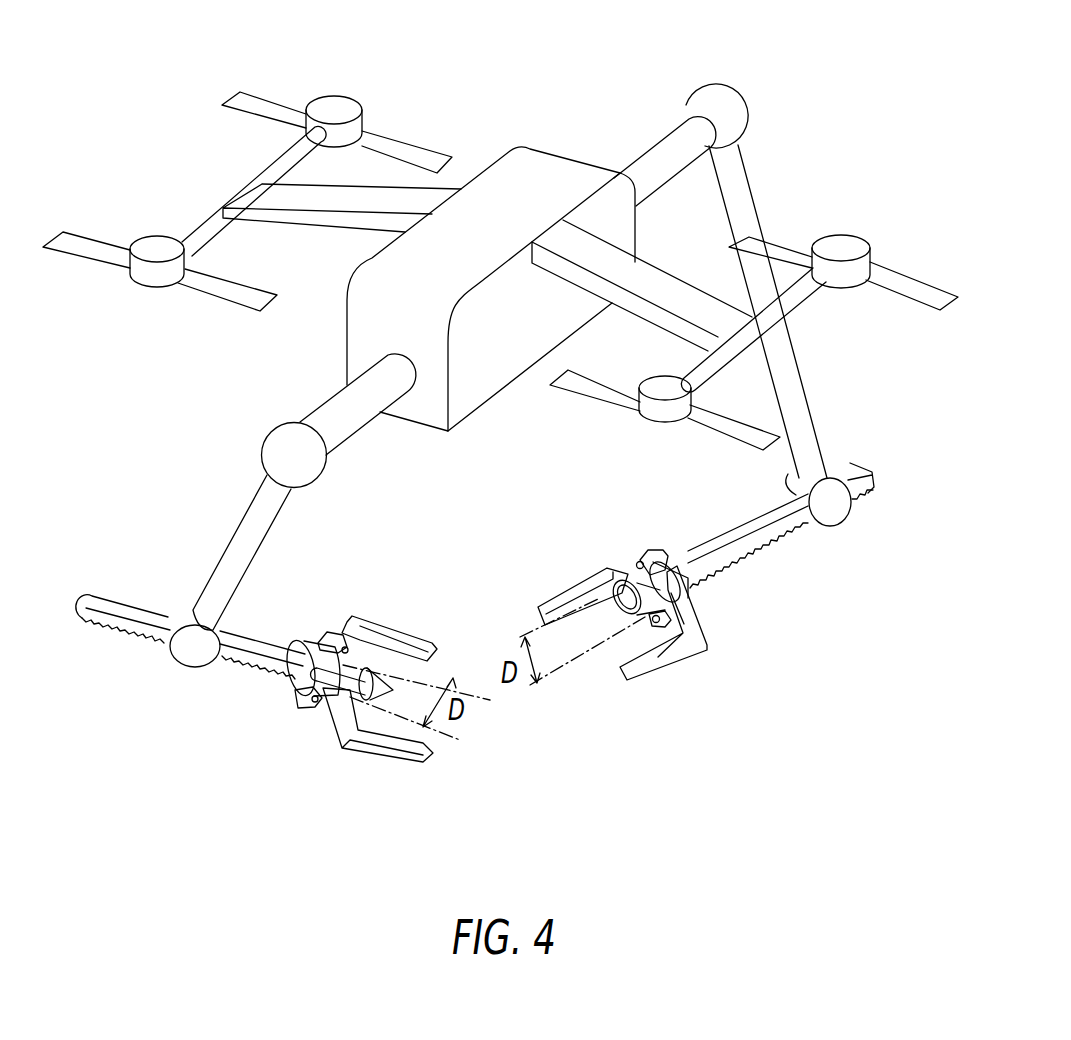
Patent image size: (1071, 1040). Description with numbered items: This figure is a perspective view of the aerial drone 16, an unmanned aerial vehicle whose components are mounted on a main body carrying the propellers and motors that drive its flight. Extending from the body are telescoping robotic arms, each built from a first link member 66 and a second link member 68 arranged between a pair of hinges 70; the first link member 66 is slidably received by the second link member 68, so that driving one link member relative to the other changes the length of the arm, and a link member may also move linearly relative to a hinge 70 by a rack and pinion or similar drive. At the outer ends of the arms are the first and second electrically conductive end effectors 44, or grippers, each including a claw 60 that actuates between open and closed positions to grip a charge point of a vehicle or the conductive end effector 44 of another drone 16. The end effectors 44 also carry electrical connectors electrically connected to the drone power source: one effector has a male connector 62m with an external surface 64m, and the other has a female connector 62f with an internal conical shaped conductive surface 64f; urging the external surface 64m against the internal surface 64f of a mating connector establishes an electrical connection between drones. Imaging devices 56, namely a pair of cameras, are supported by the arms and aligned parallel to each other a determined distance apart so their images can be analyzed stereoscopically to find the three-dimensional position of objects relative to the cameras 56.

The aerial drone 16 is at (849, 72).
The electrically conductive end effector 44 is at (327, 692).
The imaging device 56 is at (323, 633).
The claw 60 is at (390, 763).
The male connector 62m is at (357, 660).
The female connector 62f is at (700, 650).
The external surface of the male connector 64m is at (388, 657).
The internal conical shaped conductive surface 64f is at (617, 603).
The first link member 66 is at (797, 410).
The second link member 68 is at (741, 193).
The hinge 70 is at (703, 97).